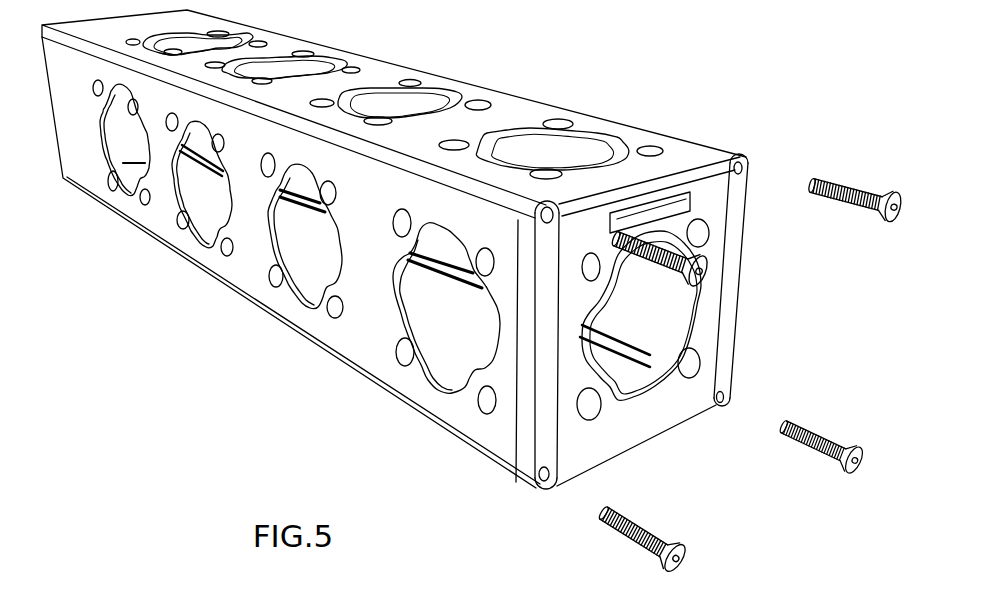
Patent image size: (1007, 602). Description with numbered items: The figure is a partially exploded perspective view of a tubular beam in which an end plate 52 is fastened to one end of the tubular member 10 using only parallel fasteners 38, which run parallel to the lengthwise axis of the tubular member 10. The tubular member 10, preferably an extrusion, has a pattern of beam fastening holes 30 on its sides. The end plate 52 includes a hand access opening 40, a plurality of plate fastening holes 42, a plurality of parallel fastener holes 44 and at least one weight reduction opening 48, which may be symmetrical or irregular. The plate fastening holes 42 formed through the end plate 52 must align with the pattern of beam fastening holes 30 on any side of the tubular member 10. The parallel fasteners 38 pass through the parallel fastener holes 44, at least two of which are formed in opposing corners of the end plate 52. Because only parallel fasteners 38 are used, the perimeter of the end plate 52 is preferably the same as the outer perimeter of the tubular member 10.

The tubular member 10 is at (470, 88).
The beam fastening holes 30 is at (337, 319).
The parallel fasteners 38 is at (840, 185).
The hand access opening 40 is at (707, 305).
The plate fastening holes 42 is at (687, 378).
The parallel fastener holes 44 is at (750, 160).
The weight reduction opening 48 is at (647, 200).
The end plate 52 is at (553, 418).